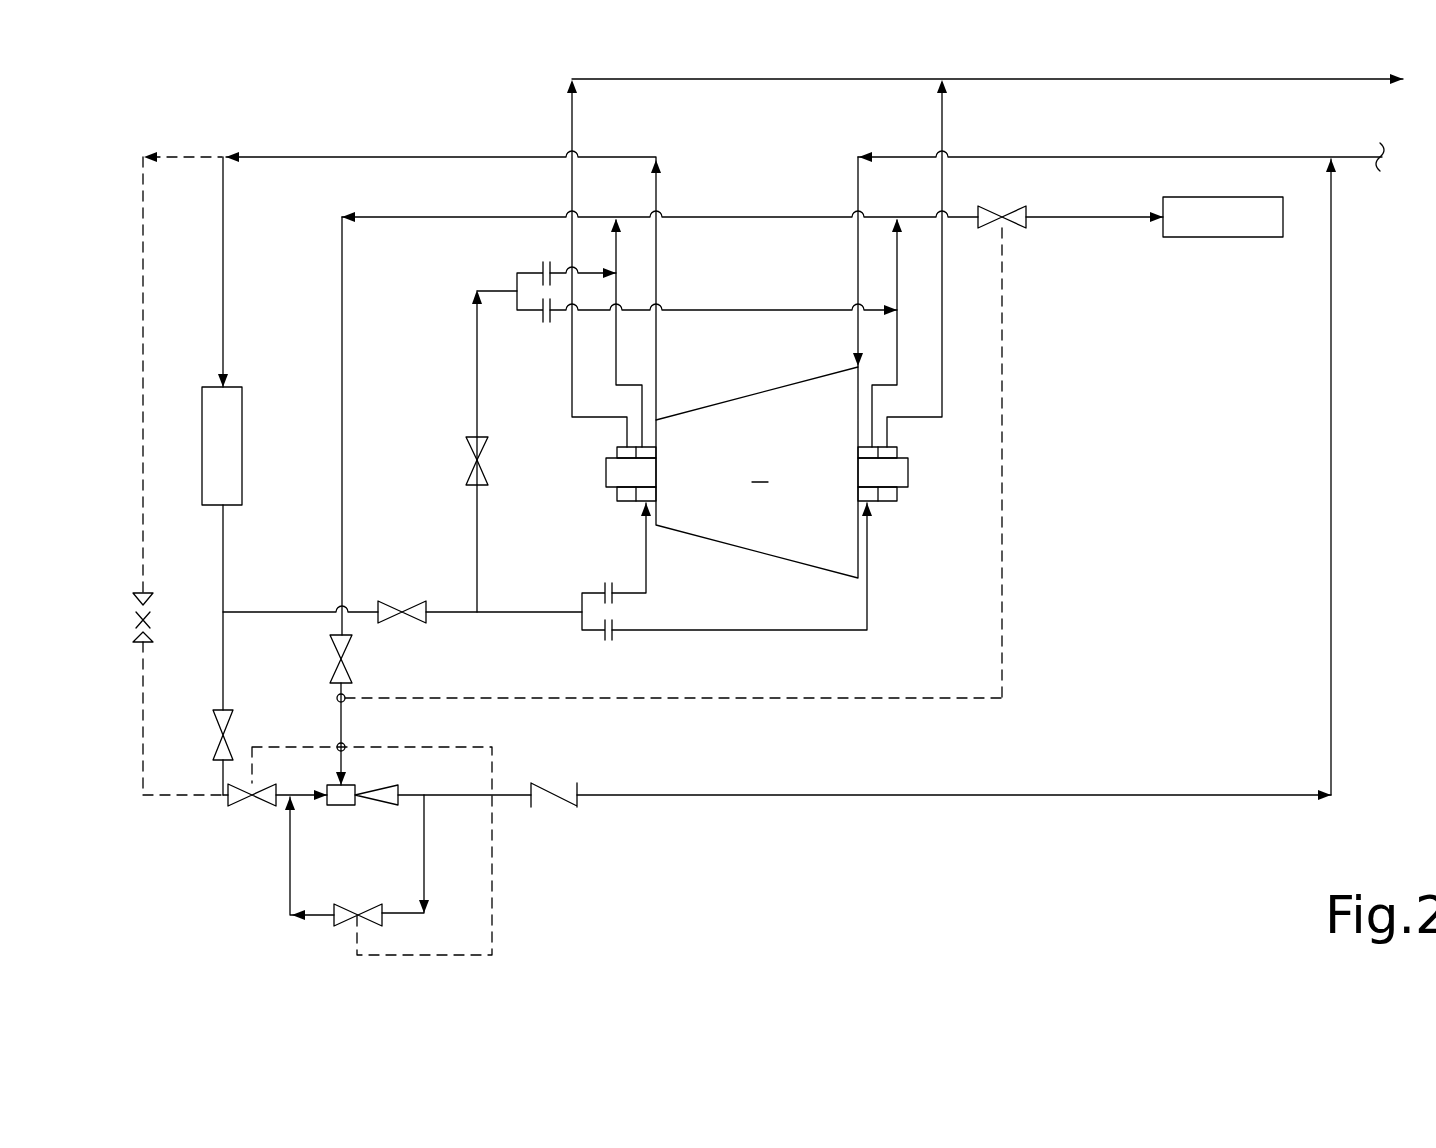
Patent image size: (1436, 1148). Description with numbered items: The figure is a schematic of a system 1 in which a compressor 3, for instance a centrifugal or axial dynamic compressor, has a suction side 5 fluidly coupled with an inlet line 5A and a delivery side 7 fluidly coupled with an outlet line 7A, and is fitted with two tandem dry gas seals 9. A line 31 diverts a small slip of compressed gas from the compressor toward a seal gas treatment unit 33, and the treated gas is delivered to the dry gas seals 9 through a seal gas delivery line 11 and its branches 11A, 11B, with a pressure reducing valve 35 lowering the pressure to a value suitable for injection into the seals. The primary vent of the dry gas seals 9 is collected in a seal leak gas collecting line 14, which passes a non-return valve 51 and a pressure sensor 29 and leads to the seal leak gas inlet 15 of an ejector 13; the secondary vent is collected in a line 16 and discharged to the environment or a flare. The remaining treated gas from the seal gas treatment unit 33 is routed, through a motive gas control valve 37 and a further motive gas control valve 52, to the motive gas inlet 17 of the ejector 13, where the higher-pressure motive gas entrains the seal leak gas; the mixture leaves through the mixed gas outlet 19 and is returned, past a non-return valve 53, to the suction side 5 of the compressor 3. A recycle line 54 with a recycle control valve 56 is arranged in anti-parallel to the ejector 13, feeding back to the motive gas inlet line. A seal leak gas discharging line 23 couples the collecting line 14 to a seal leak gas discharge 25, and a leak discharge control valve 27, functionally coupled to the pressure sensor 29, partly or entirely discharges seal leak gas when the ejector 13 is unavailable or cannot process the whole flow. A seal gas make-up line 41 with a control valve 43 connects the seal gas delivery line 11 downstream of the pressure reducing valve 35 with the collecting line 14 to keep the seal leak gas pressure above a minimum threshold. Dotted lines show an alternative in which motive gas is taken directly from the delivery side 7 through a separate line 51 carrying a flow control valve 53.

The system 1 is at (840, 828).
The compressor 3 is at (757, 472).
The suction side 5 is at (853, 363).
The delivery side 7 is at (660, 420).
The dry gas seals 9 is at (622, 493).
The seal gas delivery line 11 is at (300, 610).
The seal gas delivery line branch 11A is at (646, 568).
The seal gas delivery line branch 11B is at (690, 632).
The ejector 13 is at (375, 830).
The seal leak gas collecting line 14 is at (769, 217).
The seal leak gas inlet 15 is at (347, 784).
The line 16 is at (1183, 78).
The motive gas inlet 17 is at (326, 800).
The mixed gas outlet 19 is at (403, 794).
The seal leak gas discharging line 23 is at (1093, 238).
The seal leak gas discharge 25 is at (1248, 225).
The leak discharge control valve 27 is at (1002, 205).
The pressure sensor 29 is at (337, 745).
The line 31 is at (223, 265).
The seal gas treatment unit 33 is at (223, 437).
The pressure reducing valve 35 is at (402, 605).
The motive gas control valve 37 is at (212, 735).
The seal gas make-up line 41 is at (477, 375).
The control valve 43 is at (477, 460).
The non-return valve 51 is at (143, 377).
The motive gas control valve 52 is at (253, 805).
The non-return valve 53 is at (130, 627).
The recycle line 54 is at (424, 866).
The recycle control valve 56 is at (358, 922).
The inlet line 5A is at (1182, 157).
The outlet line 7A is at (461, 150).